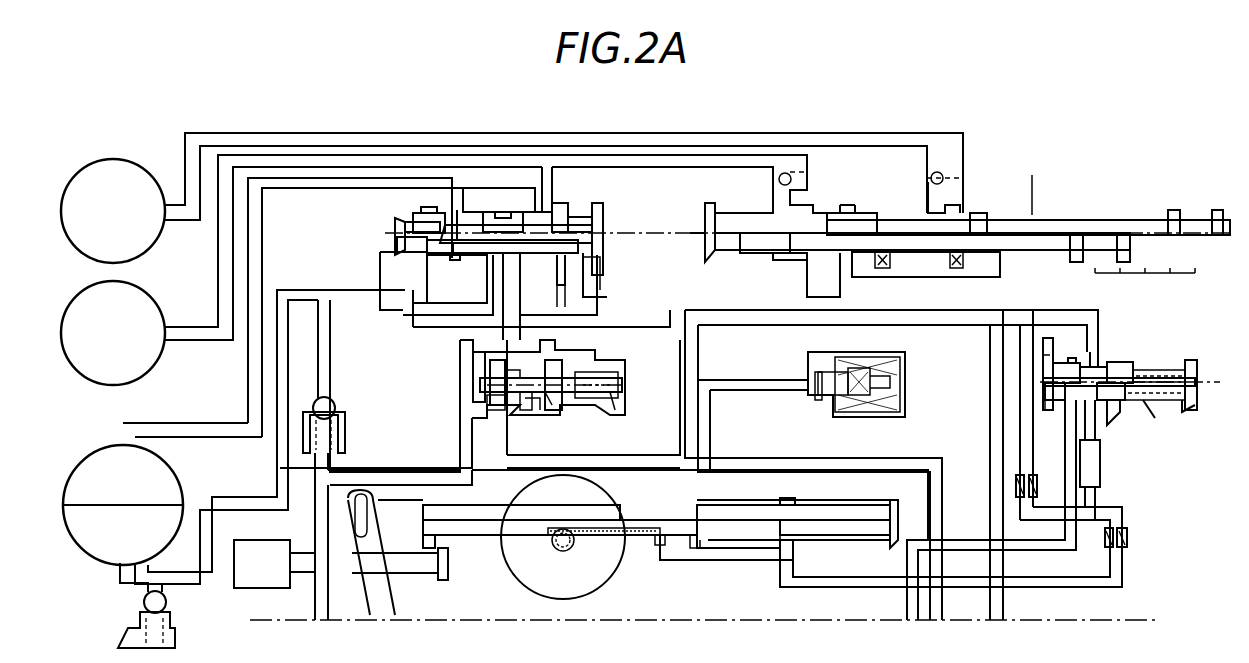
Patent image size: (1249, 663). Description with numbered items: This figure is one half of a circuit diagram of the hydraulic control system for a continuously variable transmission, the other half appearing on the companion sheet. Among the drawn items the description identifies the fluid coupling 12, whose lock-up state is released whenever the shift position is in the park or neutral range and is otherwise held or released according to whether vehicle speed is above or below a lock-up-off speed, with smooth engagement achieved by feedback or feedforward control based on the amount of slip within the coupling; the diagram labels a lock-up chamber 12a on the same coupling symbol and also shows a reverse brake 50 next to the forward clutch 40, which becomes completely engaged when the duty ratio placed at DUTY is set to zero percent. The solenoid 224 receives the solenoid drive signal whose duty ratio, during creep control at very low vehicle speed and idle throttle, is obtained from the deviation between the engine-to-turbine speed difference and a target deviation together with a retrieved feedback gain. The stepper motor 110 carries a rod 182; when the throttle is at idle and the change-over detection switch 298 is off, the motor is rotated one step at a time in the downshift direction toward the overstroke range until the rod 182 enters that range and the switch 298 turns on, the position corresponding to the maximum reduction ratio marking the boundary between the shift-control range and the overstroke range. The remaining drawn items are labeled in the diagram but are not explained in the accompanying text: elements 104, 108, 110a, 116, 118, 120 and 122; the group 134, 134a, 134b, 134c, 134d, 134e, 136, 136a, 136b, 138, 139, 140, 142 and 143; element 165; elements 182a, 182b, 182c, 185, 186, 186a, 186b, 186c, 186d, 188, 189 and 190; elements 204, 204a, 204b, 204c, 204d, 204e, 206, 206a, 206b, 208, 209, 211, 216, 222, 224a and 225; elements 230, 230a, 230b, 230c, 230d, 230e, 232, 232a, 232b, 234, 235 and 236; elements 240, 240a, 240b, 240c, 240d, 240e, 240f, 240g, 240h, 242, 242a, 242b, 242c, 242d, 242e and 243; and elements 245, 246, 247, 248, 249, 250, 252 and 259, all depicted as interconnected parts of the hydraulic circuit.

The fluid coupling 12 is at (100, 558).
The lock-up chamber 12a is at (166, 470).
The forward clutch 40 is at (162, 298).
The reverse brake 50 is at (145, 178).
The manual valve 104 is at (990, 177).
The throttle valve passage 108 is at (738, 538).
The stepper motor 110 is at (498, 590).
The cam pivot 110a is at (568, 552).
The lock-up control valve port 116 is at (1150, 410).
The lock-up solenoid 118 is at (789, 373).
The throttle modulator valve housing 120 is at (598, 408).
The shift valve housing 122 is at (345, 234).
The manual valve spool 134 is at (1020, 212).
The manual valve land 134a is at (716, 272).
The manual valve land 134b is at (807, 253).
The manual valve port 134c is at (815, 298).
The manual valve land 134d is at (922, 268).
The manual valve land 134e is at (958, 265).
The manual valve rod 136 is at (1116, 220).
The manual valve rod land 136a is at (860, 220).
The manual valve rod land 136b is at (978, 222).
The detent housing 138 is at (893, 148).
The detent ball 139 is at (948, 165).
The lock-up line 140 is at (1000, 430).
The line pressure passage 142 is at (672, 160).
The detent ball 143 is at (795, 183).
The throttle pressure line 165 is at (790, 472).
The rod 182 is at (473, 540).
The throttle valve port 182a is at (665, 540).
The throttle valve land 182b is at (818, 530).
The throttle valve spring 182c is at (652, 545).
The throttle lever 185 is at (372, 535).
The throttle valve plunger 186 is at (840, 508).
The plunger port 186a is at (690, 545).
The plunger port 186b is at (705, 548).
The plunger land 186c is at (785, 550).
The plunger land 186d is at (890, 545).
The solenoid supply line 188 is at (688, 360).
The drain line 189 is at (808, 587).
The solenoid signal line 190 is at (714, 428).
The lock-up control valve 204 is at (1170, 366).
The lock-up valve port 204a is at (1045, 410).
The lock-up valve port 204b is at (1068, 430).
The lock-up valve port 204c is at (1092, 405).
The lock-up valve port 204d is at (1122, 412).
The lock-up valve port 204e is at (1195, 412).
The lock-up valve spool 206 is at (1180, 378).
The lock-up valve land 206a is at (1078, 372).
The lock-up valve land 206b is at (1140, 360).
The lock-up valve spring 208 is at (1185, 387).
The lock-up release line 209 is at (978, 326).
The orifice 211 is at (1100, 475).
The lock-up valve chamber 216 is at (1045, 365).
The solenoid plunger 222 is at (820, 410).
The solenoid 224 is at (882, 356).
The solenoid valve seat 224a is at (830, 378).
The solenoid armature 225 is at (888, 390).
The throttle modulator valve 230 is at (620, 362).
The modulator valve port 230a is at (495, 405).
The modulator valve port 230b is at (520, 400).
The modulator valve port 230c is at (540, 405).
The modulator valve port 230d is at (552, 400).
The modulator valve port 230e is at (615, 410).
The modulator valve spool 232 is at (480, 392).
The modulator valve land 232a is at (500, 378).
The modulator valve land 232b is at (580, 364).
The modulator valve spring 234 is at (610, 380).
The passage 235 is at (515, 280).
The modulator valve plug 236 is at (475, 360).
The shift valve 240 is at (578, 215).
The shift valve port 240a is at (400, 258).
The shift valve port 240b is at (380, 268).
The shift valve port 240c is at (430, 270).
The shift valve port 240d is at (450, 290).
The shift valve port 240e is at (505, 283).
The shift valve port 240f is at (580, 250).
The shift valve port 240g is at (570, 265).
The shift valve port 240h is at (600, 270).
The shift valve spool 242 is at (392, 247).
The shift valve land 242a is at (398, 225).
The shift valve land 242b is at (445, 222).
The shift valve land 242c is at (500, 222).
The shift valve land 242d is at (560, 212).
The shift valve plunger 242e is at (600, 223).
The shift valve housing 243 is at (266, 226).
The line pressure passage 245 is at (290, 360).
The passage 246 is at (410, 300).
The passage 247 is at (478, 210).
The passage 248 is at (562, 272).
The passage 249 is at (600, 290).
The check valve 250 is at (168, 600).
The check valve 252 is at (336, 410).
The passage 259 is at (405, 476).
The change-over detection switch 298 is at (258, 540).